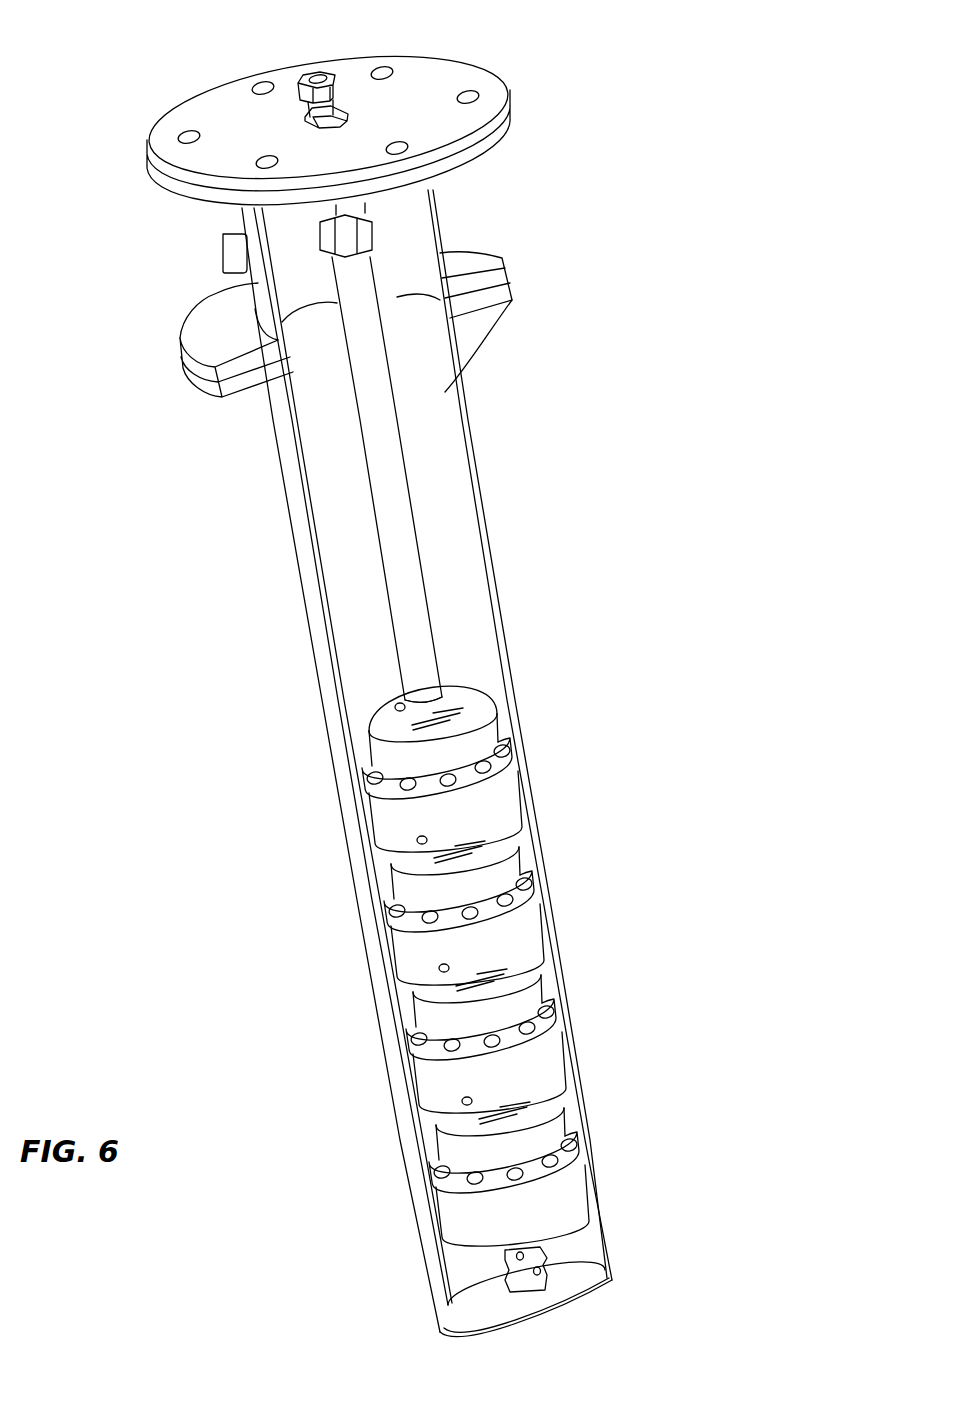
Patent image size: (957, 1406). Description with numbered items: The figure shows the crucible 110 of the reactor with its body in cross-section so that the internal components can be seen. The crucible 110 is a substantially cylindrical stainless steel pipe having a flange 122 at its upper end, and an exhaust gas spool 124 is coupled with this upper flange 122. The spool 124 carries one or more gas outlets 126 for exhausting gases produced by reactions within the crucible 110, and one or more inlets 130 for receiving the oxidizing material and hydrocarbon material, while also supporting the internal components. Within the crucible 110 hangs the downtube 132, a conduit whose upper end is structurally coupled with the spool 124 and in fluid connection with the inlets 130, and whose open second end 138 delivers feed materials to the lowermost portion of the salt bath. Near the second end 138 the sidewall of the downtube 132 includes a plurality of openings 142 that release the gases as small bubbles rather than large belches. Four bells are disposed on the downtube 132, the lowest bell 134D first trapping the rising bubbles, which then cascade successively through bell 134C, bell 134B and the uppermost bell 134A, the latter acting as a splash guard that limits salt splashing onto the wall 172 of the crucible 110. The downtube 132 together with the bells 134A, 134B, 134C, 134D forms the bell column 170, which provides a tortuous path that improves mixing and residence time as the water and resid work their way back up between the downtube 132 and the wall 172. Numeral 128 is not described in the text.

The crucible 110 is at (270, 576).
The flange 122 is at (512, 282).
The exhaust gas spool 124 is at (438, 217).
The gas outlet 126 is at (223, 247).
The tube interior 128 is at (328, 354).
The inlet 130 is at (337, 72).
The downtube 132 is at (398, 440).
The uppermost bell 134A is at (499, 718).
The bell 134B is at (528, 857).
The bell 134C is at (548, 989).
The lowest bell 134D is at (571, 1118).
The second end 138 is at (552, 1295).
The openings 142 is at (540, 1268).
The bell column 170 is at (358, 689).
The wall 172 is at (490, 560).